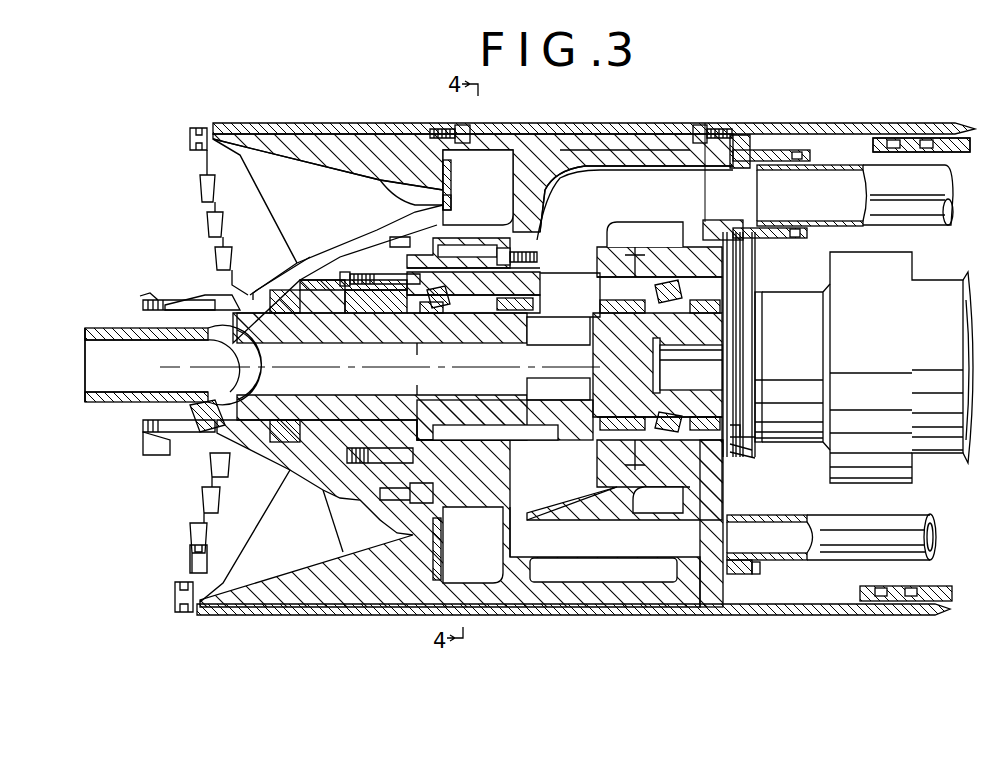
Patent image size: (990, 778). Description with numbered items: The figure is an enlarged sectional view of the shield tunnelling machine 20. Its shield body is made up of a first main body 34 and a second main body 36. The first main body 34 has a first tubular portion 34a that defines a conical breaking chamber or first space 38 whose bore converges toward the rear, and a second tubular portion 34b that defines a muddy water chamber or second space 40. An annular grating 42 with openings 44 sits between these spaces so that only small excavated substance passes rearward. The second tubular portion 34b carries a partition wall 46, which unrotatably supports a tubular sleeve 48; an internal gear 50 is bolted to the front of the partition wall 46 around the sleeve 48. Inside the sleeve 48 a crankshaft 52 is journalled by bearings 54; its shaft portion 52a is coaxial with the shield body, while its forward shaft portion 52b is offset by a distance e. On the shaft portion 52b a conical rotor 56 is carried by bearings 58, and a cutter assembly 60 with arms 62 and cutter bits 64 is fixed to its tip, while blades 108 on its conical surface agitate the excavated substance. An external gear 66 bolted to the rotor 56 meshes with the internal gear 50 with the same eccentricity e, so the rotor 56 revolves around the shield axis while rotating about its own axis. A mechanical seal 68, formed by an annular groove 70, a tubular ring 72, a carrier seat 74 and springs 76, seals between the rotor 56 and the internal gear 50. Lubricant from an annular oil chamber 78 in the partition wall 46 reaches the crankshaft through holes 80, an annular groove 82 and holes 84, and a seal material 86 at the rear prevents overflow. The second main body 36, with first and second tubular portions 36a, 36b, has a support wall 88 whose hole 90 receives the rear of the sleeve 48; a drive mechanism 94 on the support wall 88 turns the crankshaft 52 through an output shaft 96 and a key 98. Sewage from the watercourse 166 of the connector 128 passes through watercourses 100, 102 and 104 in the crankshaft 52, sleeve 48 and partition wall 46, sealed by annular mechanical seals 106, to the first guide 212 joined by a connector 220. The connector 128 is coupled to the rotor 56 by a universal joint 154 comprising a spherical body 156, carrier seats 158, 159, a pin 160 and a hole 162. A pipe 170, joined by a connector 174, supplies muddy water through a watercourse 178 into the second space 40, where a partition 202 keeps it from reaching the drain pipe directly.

The shield tunnelling machine 20 is at (708, 120).
The first main body 34 is at (432, 125).
The first tubular portion 34a is at (300, 123).
The second tubular portion 34b is at (602, 128).
The second main body 36 is at (940, 127).
The first tubular portion 36a is at (905, 137).
The second tubular portion 36b is at (968, 138).
The first space 38 is at (333, 172).
The second space 40 is at (512, 160).
The annular grating 42 is at (451, 207).
The openings 44 is at (451, 178).
The partition wall 46 is at (553, 165).
The tubular sleeve 48 is at (477, 322).
The internal gear 50 is at (515, 225).
The crankshaft 52 is at (320, 277).
The shaft portion 52a is at (521, 333).
The shaft portion 52b is at (333, 277).
The bearings 54 is at (415, 356).
The rotor 56 is at (313, 472).
The bearings 58 is at (284, 402).
The cutter assembly 60 is at (204, 110).
The arms 62 is at (193, 565).
The cutter bits 64 is at (207, 232).
The external gear 66 is at (495, 505).
The mechanical seal 68 is at (408, 210).
The annular groove 70 is at (408, 227).
The tubular ring 72 is at (413, 196).
The annular carrier seat 74 is at (455, 236).
The springs 76 is at (408, 250).
The annular oil chamber 78 is at (650, 604).
The holes 80 is at (636, 262).
The annular groove 82 is at (660, 470).
The holes 84 is at (627, 450).
The seal material 86 is at (743, 293).
The support wall 88 is at (743, 247).
The hole 90 is at (745, 455).
The drive mechanism 94 is at (936, 298).
The output shaft 96 is at (731, 358).
The key 98 is at (731, 342).
The watercourse 100 is at (380, 376).
The watercourse 102 is at (505, 420).
The watercourse 104 is at (652, 172).
The annular mechanical seals 106 is at (603, 407).
The blades 108 is at (347, 530).
The connector 128 is at (100, 402).
The universal joint 154 is at (148, 292).
The spherical body 156 is at (143, 418).
The carrier seat 158 is at (205, 294).
The carrier seat 159 is at (142, 440).
The pin 160 is at (196, 432).
The hole 162 is at (205, 397).
The watercourse 166 is at (146, 365).
The pipe 170 is at (922, 530).
The connector 174 is at (755, 562).
The watercourse 178 is at (578, 560).
The partition 202 is at (492, 578).
The first guide 212 is at (843, 165).
The connector 220 is at (778, 160).
The distance e is at (432, 350).